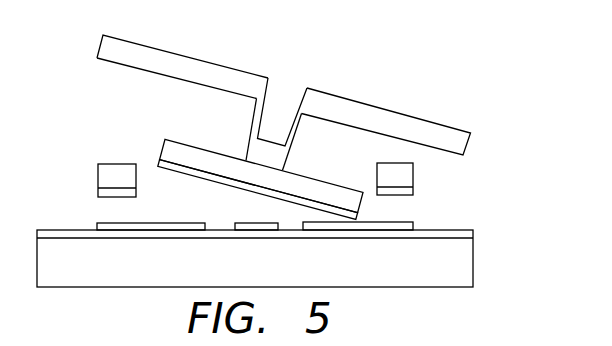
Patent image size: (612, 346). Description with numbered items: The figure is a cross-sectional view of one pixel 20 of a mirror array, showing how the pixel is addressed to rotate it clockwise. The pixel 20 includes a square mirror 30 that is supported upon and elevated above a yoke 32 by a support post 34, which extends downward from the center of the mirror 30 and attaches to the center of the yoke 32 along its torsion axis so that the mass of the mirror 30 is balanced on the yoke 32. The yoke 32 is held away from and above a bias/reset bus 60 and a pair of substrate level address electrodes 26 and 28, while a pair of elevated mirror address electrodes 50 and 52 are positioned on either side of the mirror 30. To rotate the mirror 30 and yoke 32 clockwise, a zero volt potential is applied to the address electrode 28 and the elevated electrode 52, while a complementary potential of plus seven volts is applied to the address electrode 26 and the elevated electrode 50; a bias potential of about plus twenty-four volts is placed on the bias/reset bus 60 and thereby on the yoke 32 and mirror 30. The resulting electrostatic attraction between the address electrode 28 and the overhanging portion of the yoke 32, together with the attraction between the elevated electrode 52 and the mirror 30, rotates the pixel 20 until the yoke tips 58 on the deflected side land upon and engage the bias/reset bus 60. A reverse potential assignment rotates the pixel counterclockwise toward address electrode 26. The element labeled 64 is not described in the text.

The pixel 20 is at (284, 96).
The mirror 30 is at (438, 123).
The yoke 32 is at (177, 142).
The support post 34 is at (299, 126).
The elevated mirror address electrode 50 is at (98, 177).
The elevated mirror address electrode 52 is at (413, 176).
The address electrode 26 is at (97, 222).
The bias/reset bus 60 is at (245, 222).
The address electrode 28 is at (404, 221).
The yoke tips 58 is at (358, 219).
The substrate 64 is at (473, 260).